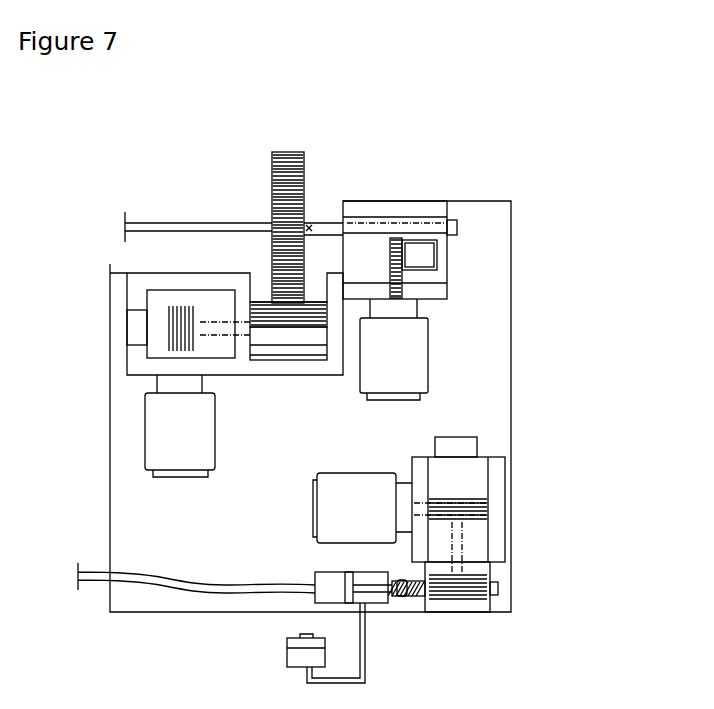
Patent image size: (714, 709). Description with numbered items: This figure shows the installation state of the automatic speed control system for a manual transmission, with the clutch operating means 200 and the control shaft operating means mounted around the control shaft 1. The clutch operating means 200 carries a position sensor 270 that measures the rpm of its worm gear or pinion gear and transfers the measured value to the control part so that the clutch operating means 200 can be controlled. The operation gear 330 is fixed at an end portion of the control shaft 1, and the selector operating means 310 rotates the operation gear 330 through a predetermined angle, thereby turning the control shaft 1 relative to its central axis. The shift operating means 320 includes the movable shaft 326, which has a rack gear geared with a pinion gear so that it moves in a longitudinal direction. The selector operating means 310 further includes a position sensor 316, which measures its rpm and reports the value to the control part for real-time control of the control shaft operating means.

The control shaft 1 is at (188, 222).
The clutch operating means 200 is at (499, 447).
The position sensor 270 is at (458, 437).
The selector operating means 310 is at (119, 291).
The position sensor 316 is at (128, 328).
The shift operating means 320 is at (461, 211).
The movable shaft 326 is at (450, 270).
The operation gear 330 is at (316, 147).